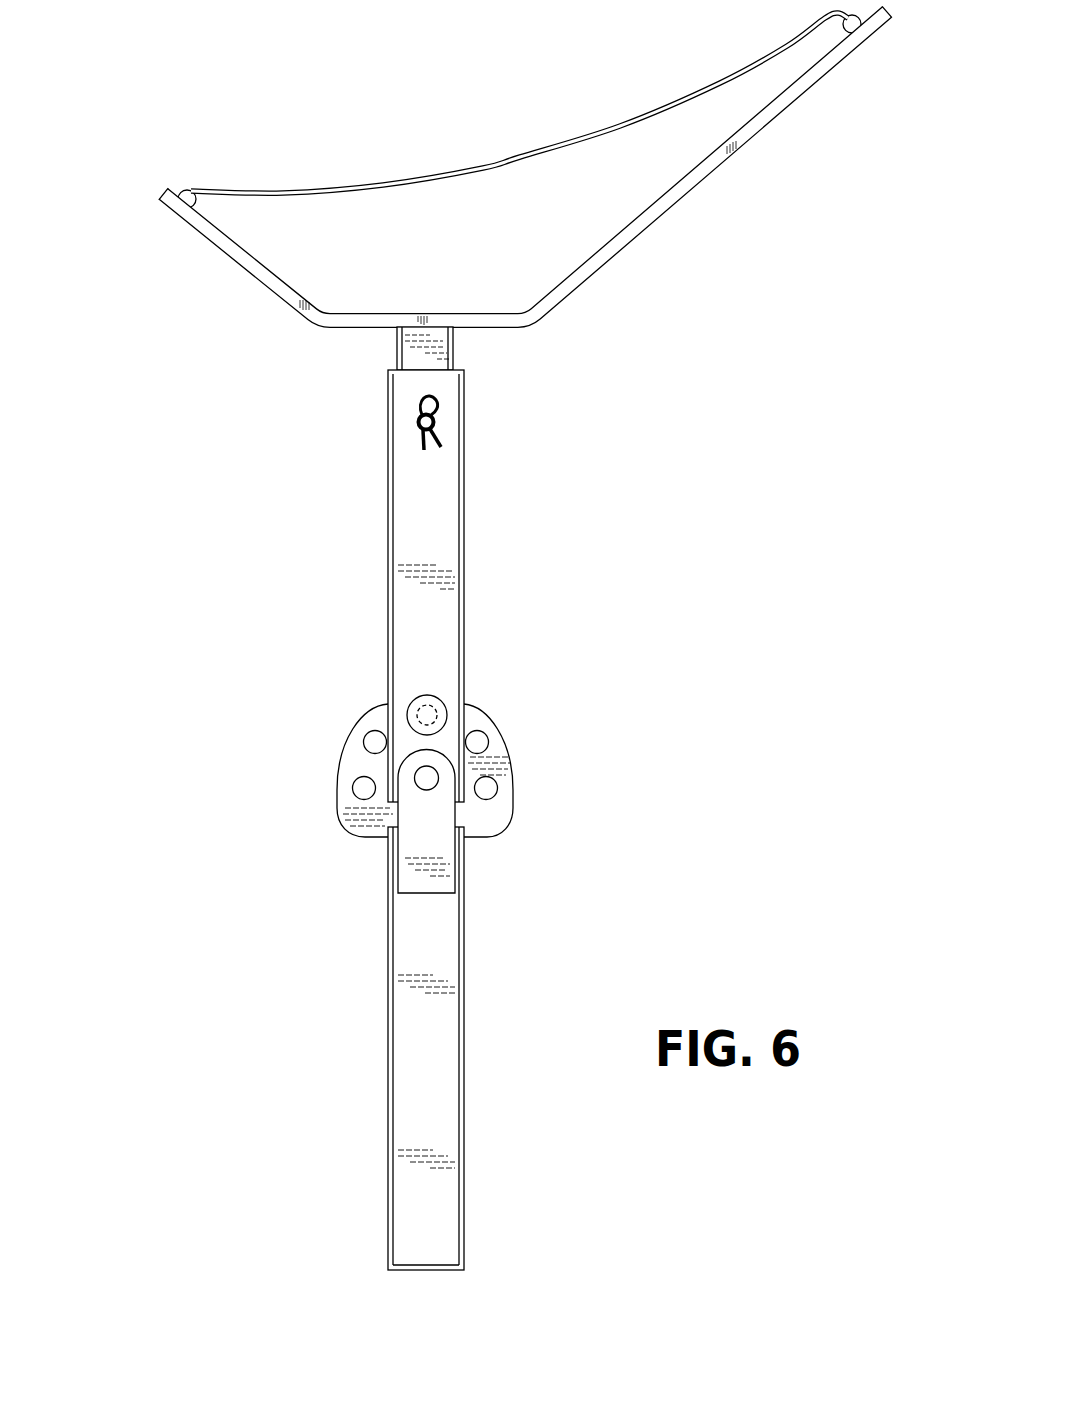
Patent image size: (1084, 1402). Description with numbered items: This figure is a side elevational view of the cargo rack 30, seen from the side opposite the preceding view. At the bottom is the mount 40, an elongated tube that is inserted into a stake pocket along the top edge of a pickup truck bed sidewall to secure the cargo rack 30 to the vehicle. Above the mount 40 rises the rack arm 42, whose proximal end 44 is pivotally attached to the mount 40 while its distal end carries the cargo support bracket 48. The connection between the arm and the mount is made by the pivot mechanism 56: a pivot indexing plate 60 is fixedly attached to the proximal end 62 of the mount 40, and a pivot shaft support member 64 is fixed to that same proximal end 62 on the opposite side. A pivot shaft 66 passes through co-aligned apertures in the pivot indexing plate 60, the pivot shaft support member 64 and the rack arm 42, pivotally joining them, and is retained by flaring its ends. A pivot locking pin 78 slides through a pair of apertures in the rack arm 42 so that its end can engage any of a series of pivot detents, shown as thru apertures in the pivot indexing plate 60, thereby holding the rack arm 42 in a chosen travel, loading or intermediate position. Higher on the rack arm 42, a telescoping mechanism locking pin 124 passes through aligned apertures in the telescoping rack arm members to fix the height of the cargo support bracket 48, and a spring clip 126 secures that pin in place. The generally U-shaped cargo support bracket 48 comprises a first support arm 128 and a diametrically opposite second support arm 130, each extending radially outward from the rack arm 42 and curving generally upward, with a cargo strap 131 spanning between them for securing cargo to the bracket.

The cargo rack 30 is at (222, 589).
The mount 40 is at (390, 1024).
The rack arm 42 is at (472, 542).
The proximal end 44 is at (363, 767).
The cargo support bracket 48 is at (680, 207).
The pivot mechanism 56 is at (524, 796).
The pivot indexing plate 60 is at (363, 725).
The proximal end 62 is at (465, 878).
The pivot shaft support member 64 is at (398, 855).
The pivot shaft 66 is at (414, 782).
The pivot locking pin 78 is at (443, 699).
The telescoping mechanism locking pin 124 is at (418, 418).
The spring clip 126 is at (440, 437).
The first support arm 128 is at (817, 84).
The second support arm 130 is at (222, 253).
The cargo strap 131 is at (499, 164).